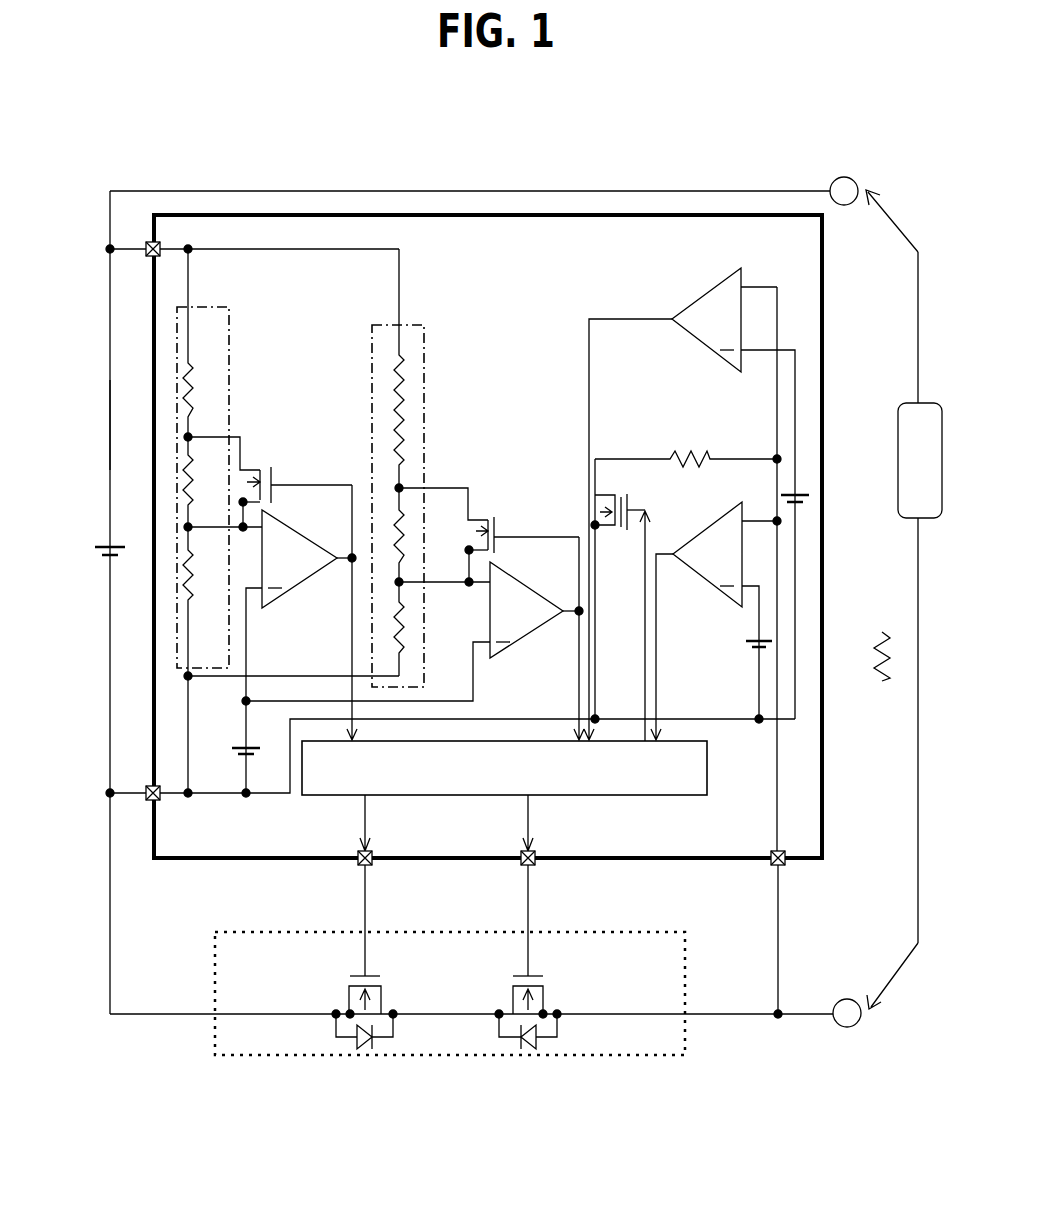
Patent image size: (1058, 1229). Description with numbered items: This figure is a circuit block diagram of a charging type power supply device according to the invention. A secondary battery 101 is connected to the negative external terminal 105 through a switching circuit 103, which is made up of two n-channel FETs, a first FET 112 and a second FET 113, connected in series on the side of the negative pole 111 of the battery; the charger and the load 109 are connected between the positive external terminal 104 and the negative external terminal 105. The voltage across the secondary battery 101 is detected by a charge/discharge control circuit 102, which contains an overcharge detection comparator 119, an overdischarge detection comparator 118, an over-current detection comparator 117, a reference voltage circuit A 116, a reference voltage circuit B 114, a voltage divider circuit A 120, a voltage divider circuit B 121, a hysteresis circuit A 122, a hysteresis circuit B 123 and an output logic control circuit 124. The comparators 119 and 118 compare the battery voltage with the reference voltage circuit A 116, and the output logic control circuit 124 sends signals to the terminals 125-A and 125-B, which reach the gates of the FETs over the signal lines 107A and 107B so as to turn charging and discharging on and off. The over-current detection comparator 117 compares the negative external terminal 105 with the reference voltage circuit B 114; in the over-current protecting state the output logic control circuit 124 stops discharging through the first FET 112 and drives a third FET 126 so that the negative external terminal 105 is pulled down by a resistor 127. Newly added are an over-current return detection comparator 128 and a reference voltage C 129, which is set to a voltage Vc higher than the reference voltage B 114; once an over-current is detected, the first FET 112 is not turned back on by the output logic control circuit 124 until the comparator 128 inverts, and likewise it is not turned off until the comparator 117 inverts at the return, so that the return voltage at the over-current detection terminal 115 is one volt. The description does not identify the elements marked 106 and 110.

The secondary battery 101 is at (86, 547).
The charge/discharge control circuit 102 is at (126, 430).
The switching circuit 103 is at (212, 1032).
The external terminal +V0 104 is at (856, 170).
The external terminal −V0 105 is at (865, 1025).
The battery protection IC 106 is at (788, 958).
The signal line 107A is at (370, 900).
The signal line 107B is at (535, 900).
The load 109 is at (878, 626).
The positive power supply line 110 is at (98, 282).
The negative pole 111 is at (115, 903).
The FET-A 112 is at (337, 995).
The FET-B 113 is at (718, 619).
The reference voltage circuit B 114 is at (740, 643).
The over-current detection terminal 115 is at (766, 846).
The reference voltage circuit A 116 is at (253, 766).
The over-current detection comparator 117 is at (683, 527).
The overdischarge detection comparator 118 is at (538, 634).
The overcharge detection comparator 119 is at (303, 589).
The voltage divider circuit A 120 is at (230, 393).
The voltage divider circuit B 121 is at (426, 396).
The hysteresis circuit A 122 is at (256, 462).
The hysteresis circuit B 123 is at (482, 510).
The output logic control circuit 124 is at (610, 796).
The terminal 125-A is at (382, 846).
The terminal 125-B is at (547, 846).
The FET-C 126 is at (603, 489).
The resistor 127 is at (685, 443).
The over-current return detection comparator 128 is at (698, 283).
The reference voltage C 129 is at (800, 491).